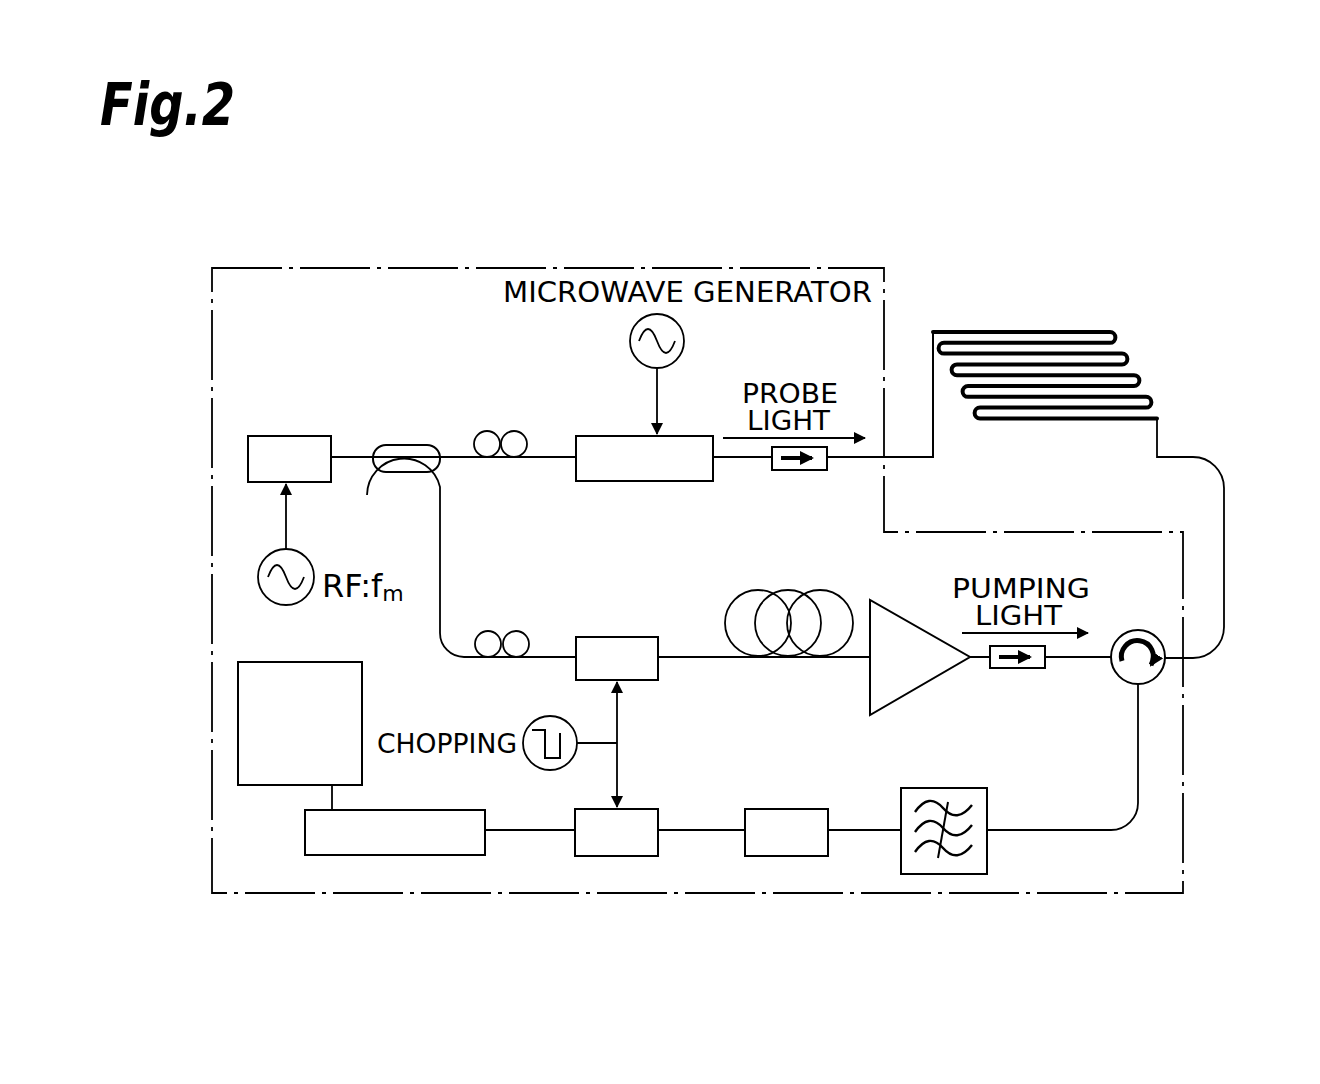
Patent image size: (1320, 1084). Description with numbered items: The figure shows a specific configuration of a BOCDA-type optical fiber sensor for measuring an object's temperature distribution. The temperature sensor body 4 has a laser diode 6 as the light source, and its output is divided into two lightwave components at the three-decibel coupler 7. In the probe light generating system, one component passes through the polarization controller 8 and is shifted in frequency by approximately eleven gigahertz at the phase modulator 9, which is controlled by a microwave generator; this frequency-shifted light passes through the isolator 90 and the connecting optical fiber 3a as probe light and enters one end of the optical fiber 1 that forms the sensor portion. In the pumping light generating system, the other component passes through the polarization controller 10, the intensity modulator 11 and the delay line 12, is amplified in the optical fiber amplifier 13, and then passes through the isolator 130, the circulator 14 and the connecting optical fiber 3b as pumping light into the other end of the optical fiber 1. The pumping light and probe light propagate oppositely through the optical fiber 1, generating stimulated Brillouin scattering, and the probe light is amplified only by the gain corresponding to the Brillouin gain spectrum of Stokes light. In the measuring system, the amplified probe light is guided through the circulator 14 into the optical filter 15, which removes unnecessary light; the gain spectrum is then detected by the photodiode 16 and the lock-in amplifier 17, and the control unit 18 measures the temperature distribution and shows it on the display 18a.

The optical fiber 1 is at (1137, 316).
The connecting optical fiber 3a is at (930, 405).
The connecting optical fiber 3b is at (1224, 513).
The temperature sensor body 4 is at (364, 266).
The laser diode 6 is at (282, 436).
The 3 dB-coupler 7 is at (386, 445).
The polarization controller 8 is at (485, 431).
The phase modulator 9 is at (615, 481).
The isolator 90 is at (795, 470).
The polarization controller 10 is at (488, 630).
The intensity modulator 11 is at (658, 672).
The delay line 12 is at (737, 605).
The optical fiber amplifier 13 is at (870, 690).
The isolator 130 is at (1015, 672).
The circulator 14 is at (1119, 683).
The optical filter 15 is at (987, 810).
The photodiode 16 is at (780, 809).
The lock-in amplifier 17 is at (633, 809).
The control unit 18 is at (305, 827).
The display 18a is at (348, 702).